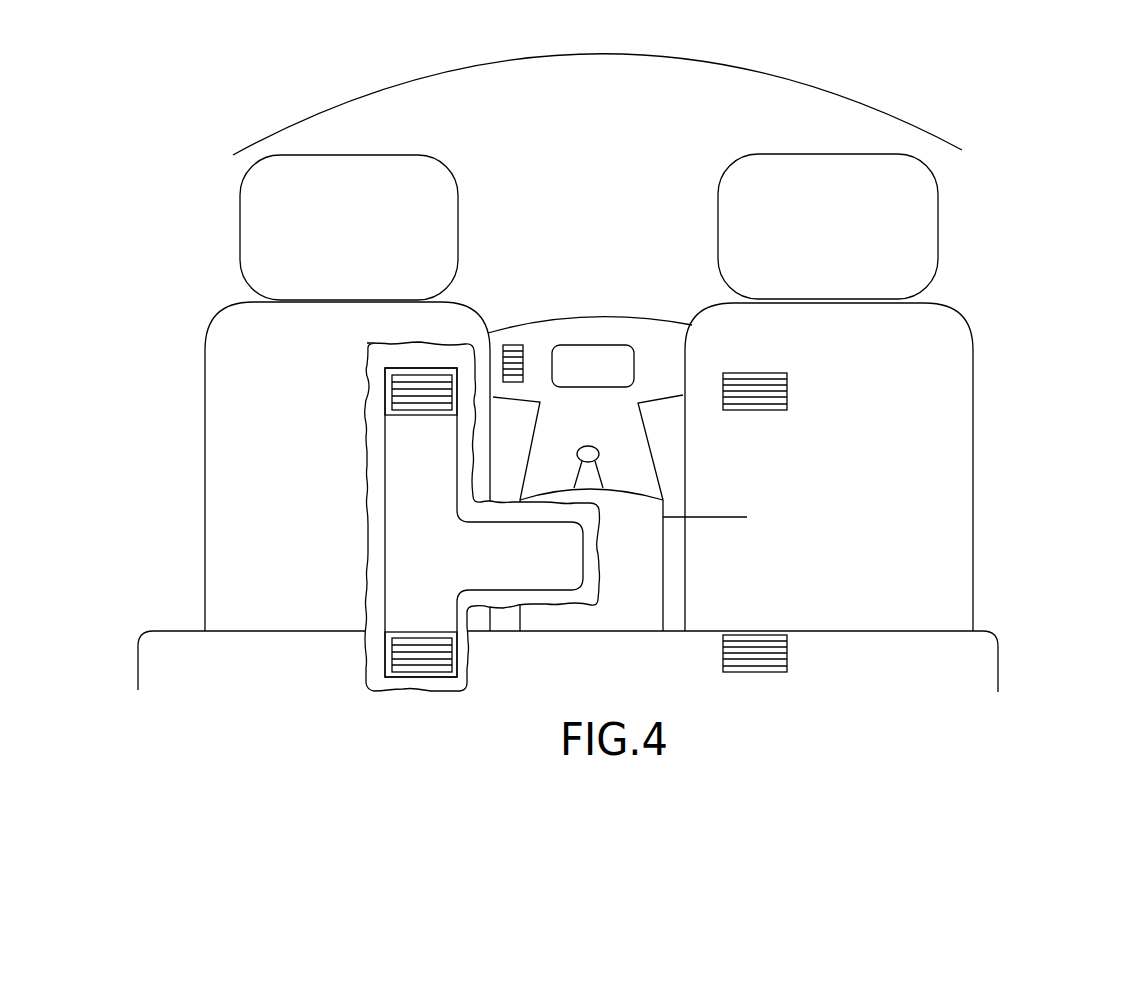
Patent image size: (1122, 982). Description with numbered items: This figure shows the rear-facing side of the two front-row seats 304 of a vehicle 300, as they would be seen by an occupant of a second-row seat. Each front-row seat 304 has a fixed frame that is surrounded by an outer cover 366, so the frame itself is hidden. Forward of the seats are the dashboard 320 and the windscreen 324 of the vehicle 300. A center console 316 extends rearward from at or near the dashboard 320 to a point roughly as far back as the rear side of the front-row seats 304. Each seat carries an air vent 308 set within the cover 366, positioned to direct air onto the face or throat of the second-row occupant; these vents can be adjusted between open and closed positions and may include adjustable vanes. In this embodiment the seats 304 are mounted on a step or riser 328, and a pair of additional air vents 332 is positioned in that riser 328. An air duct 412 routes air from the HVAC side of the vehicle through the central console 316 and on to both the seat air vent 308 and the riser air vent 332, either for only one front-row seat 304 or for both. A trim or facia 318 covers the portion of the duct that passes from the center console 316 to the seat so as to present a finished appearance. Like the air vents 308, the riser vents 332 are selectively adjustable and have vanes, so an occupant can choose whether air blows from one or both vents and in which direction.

The vehicle 300 is at (940, 73).
The front-row seat 304 is at (603, 392).
The air vent 308 is at (378, 380).
The center console 316 is at (652, 557).
The trim or facia 318 is at (725, 517).
The dashboard 320 is at (651, 324).
The windscreen 324 is at (745, 78).
The step or riser 328 is at (975, 663).
The air vent 332 is at (455, 655).
The outer cover 366 is at (220, 444).
The air duct 412 is at (378, 479).